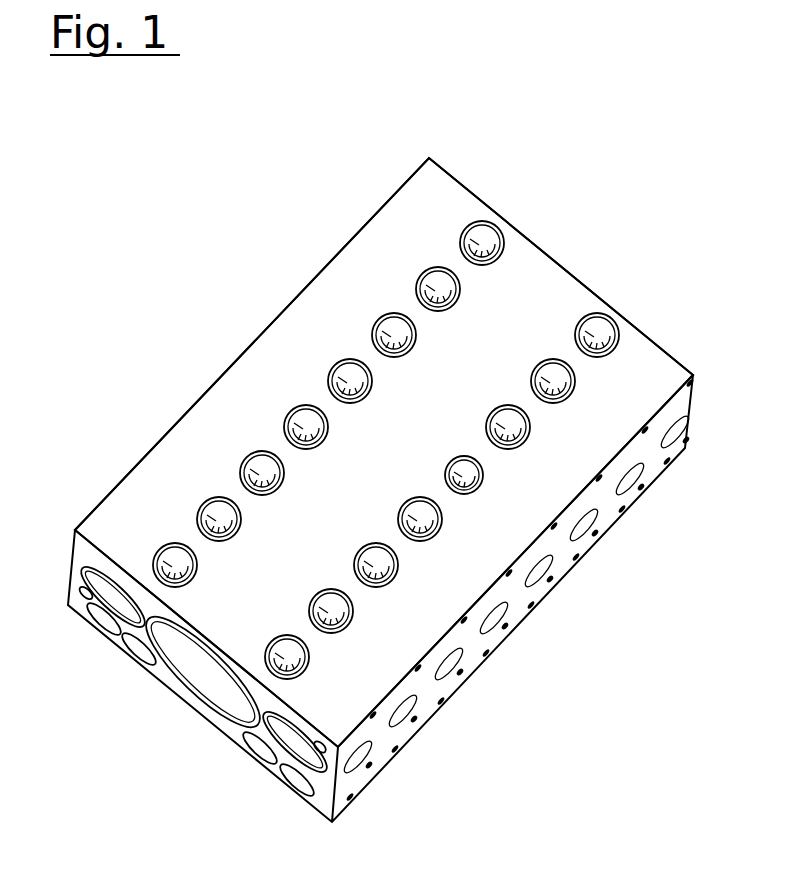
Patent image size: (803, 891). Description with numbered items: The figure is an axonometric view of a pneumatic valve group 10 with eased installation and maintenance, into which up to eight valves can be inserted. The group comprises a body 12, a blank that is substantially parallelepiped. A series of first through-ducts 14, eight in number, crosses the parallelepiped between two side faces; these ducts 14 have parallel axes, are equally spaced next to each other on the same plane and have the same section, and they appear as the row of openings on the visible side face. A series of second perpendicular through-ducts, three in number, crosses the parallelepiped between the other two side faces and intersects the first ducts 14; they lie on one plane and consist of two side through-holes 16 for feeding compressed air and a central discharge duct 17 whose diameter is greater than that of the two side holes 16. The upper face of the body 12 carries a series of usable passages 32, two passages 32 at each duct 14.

The pneumatic valve group 10 is at (280, 238).
The body 12 is at (220, 437).
The first through-ducts 14 is at (631, 481).
The side through-holes 16 is at (287, 740).
The central discharge duct 17 is at (202, 667).
The usable passages 32 is at (485, 240).